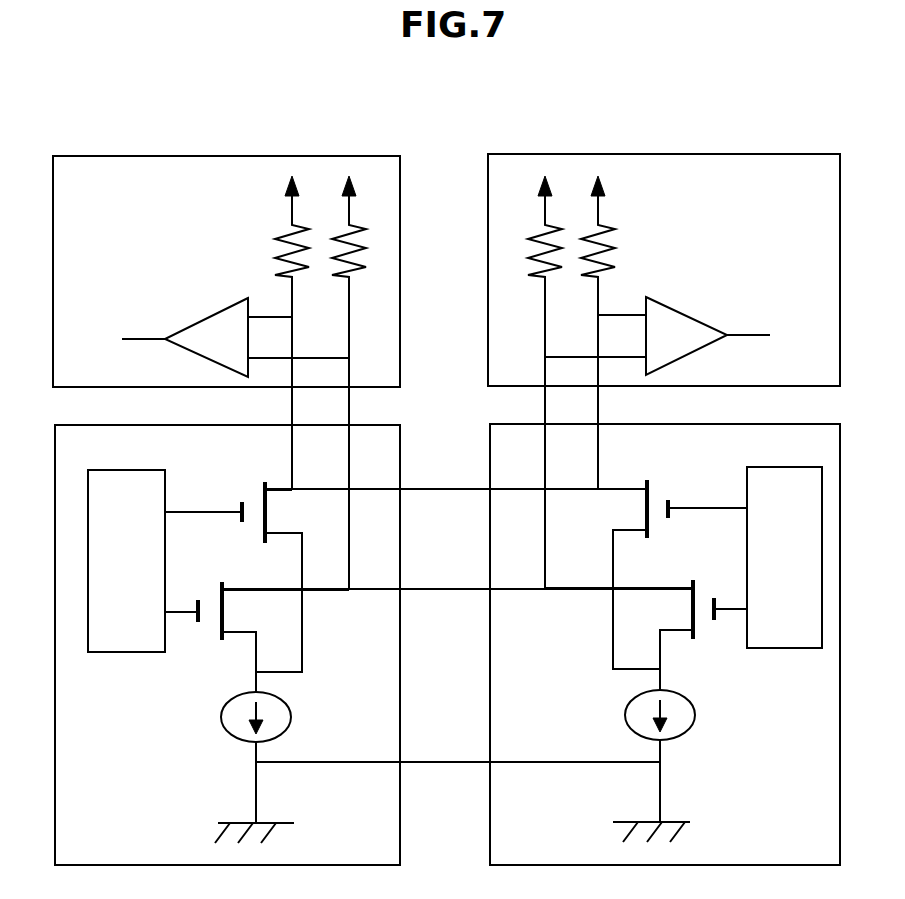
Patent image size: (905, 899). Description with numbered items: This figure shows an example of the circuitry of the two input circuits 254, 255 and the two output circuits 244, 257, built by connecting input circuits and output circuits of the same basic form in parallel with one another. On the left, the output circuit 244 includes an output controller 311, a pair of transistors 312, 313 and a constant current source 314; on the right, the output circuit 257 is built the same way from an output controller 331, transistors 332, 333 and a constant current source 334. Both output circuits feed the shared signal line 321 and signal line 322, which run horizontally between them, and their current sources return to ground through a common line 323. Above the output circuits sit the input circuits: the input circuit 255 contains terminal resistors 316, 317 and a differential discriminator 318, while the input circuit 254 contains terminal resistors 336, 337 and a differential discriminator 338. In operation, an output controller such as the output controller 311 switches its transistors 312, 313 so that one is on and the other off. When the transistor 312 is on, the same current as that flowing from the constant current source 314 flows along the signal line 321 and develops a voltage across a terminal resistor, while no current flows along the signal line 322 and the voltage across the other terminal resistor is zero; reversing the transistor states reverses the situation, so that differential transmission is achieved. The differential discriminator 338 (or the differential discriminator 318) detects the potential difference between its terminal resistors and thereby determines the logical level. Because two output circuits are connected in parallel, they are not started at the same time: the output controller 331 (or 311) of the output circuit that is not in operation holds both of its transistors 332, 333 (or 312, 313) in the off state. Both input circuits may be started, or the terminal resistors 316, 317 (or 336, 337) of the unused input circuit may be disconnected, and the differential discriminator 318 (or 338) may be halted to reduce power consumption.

The input circuit 255 is at (175, 156).
The input circuit 254 is at (640, 154).
The output circuit 244 is at (376, 425).
The output circuit 257 is at (706, 424).
The terminal resistor 316 is at (277, 236).
The terminal resistor 317 is at (336, 277).
The differential discriminator 318 is at (193, 318).
The terminal resistor 336 is at (614, 230).
The terminal resistor 337 is at (553, 273).
The differential discriminator 338 is at (698, 318).
The output controller 311 is at (103, 468).
The transistor 312 is at (243, 490).
The transistor 313 is at (203, 632).
The constant current source 314 is at (300, 712).
The output controller 331 is at (757, 468).
The transistor 332 is at (670, 489).
The transistor 333 is at (708, 630).
The constant current source 334 is at (617, 712).
The signal line 321 is at (415, 489).
The signal line 322 is at (415, 589).
The ground line 323 is at (418, 762).